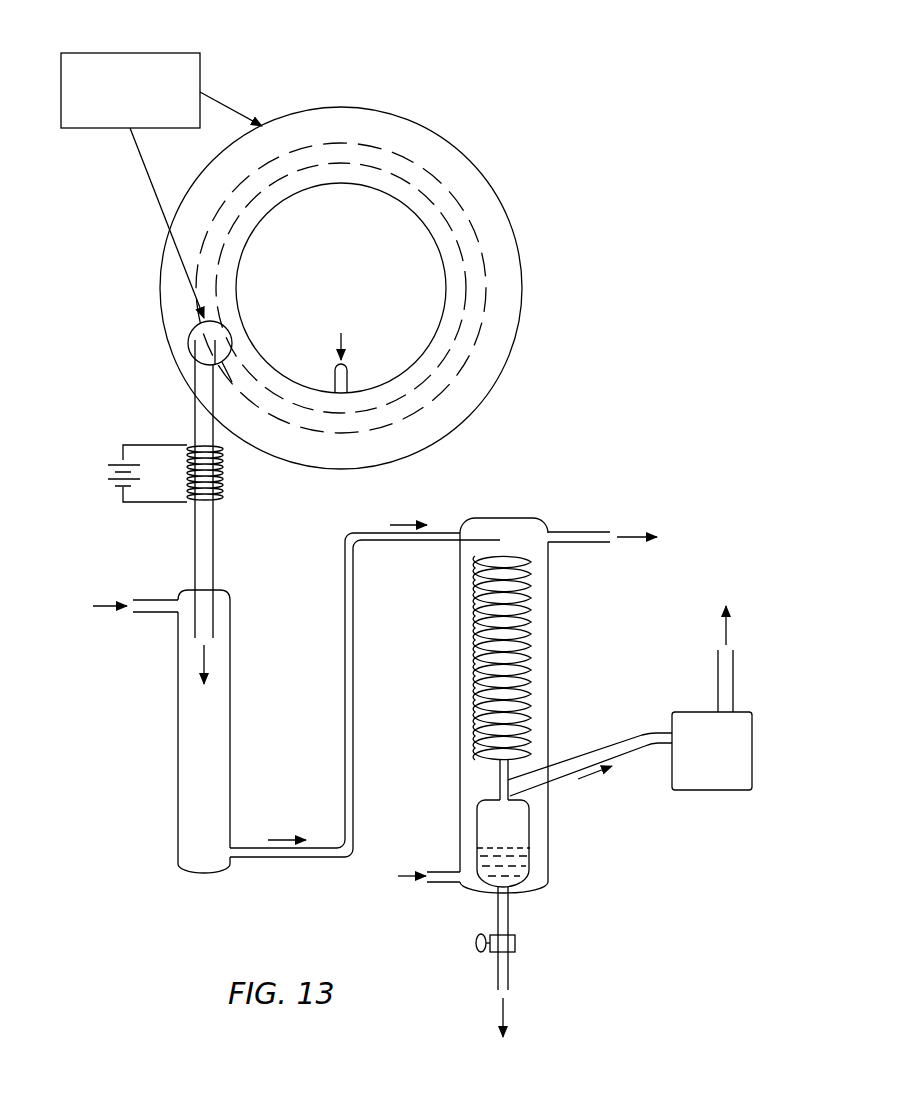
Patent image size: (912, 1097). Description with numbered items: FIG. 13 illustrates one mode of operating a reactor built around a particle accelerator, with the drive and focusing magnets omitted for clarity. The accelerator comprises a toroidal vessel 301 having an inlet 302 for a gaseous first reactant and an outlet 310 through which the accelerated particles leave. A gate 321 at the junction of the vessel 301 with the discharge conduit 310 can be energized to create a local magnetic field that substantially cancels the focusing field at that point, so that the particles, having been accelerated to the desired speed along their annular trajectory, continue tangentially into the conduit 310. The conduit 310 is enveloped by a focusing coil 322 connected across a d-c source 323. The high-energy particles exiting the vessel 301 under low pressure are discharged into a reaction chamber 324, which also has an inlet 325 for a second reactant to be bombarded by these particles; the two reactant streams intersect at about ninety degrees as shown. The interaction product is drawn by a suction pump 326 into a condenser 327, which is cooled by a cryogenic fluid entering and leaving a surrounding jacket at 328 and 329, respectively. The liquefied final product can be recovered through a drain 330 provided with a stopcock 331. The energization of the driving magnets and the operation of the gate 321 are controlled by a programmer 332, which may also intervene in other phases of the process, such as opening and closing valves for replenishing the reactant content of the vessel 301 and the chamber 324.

The toroidal vessel 301 is at (497, 193).
The inlet 302 is at (348, 372).
The outlet 310 is at (208, 540).
The gate 321 is at (188, 342).
The focusing coil 322 is at (223, 477).
The d-c source 323 is at (107, 470).
The reaction chamber 324 is at (177, 731).
The inlet 325 is at (141, 614).
The suction pump 326 is at (752, 757).
The condenser 327 is at (530, 640).
The jacket inlet 328 is at (432, 884).
The jacket outlet 329 is at (591, 530).
The drain 330 is at (512, 915).
The stopcock 331 is at (481, 953).
The programmer 332 is at (122, 54).